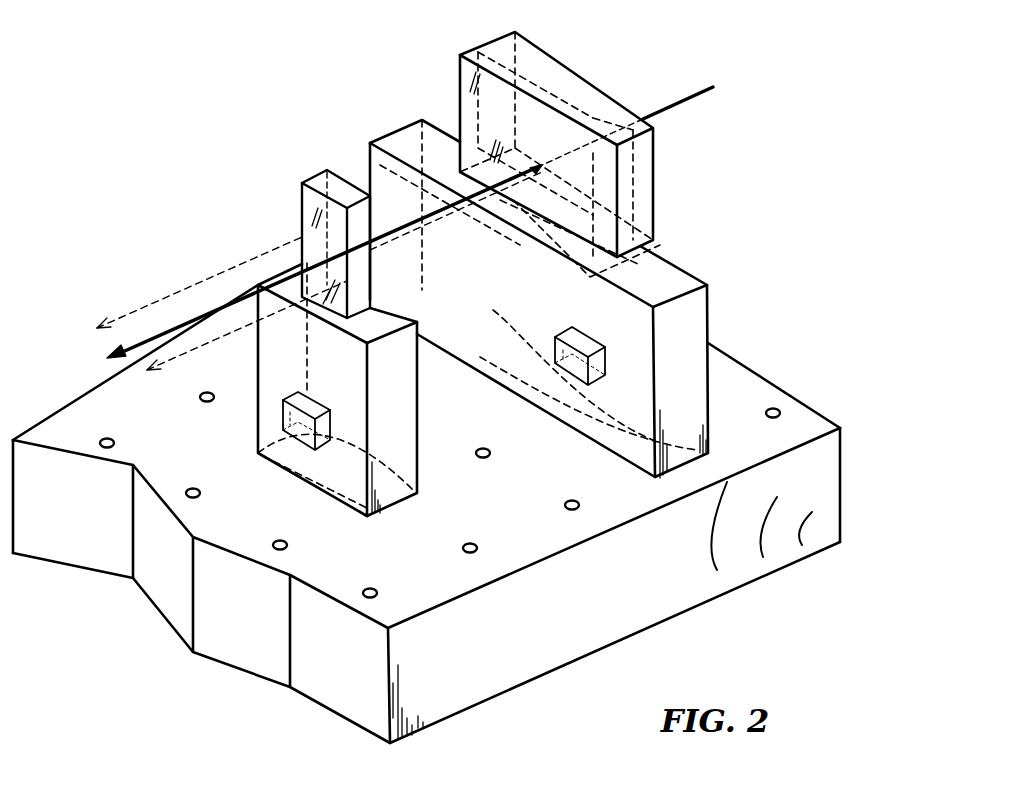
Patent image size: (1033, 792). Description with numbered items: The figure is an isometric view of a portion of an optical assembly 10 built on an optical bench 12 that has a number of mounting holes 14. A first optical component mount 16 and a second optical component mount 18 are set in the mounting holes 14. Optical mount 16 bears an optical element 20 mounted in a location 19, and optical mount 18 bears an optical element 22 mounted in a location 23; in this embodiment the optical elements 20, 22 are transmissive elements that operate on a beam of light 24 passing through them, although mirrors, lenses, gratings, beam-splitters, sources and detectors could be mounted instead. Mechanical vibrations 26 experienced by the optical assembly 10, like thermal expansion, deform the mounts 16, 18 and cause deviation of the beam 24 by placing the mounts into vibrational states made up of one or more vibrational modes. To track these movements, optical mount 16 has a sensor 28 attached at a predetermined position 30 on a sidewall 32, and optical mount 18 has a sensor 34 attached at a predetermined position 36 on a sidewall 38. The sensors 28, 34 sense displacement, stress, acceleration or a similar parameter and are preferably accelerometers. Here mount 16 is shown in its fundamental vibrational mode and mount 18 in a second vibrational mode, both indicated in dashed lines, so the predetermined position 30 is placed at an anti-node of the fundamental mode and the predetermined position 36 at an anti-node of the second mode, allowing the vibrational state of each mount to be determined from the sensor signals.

The optical assembly 10 is at (140, 118).
The optical bench 12 is at (762, 380).
The mounting holes 14 is at (193, 491).
The first optical component mount 16 is at (413, 444).
The second optical component mount 18 is at (700, 327).
The location 19 is at (381, 325).
The optical element 20 is at (302, 238).
The optical element 22 is at (460, 113).
The location 23 is at (650, 262).
The beam of light 24 is at (197, 317).
The mechanical vibrations 26 is at (710, 525).
The sensor 28 is at (283, 413).
The predetermined position 30 is at (338, 470).
The sidewall 32 is at (270, 375).
The sensor 34 is at (556, 338).
The predetermined position 36 is at (626, 357).
The sidewall 38 is at (617, 440).